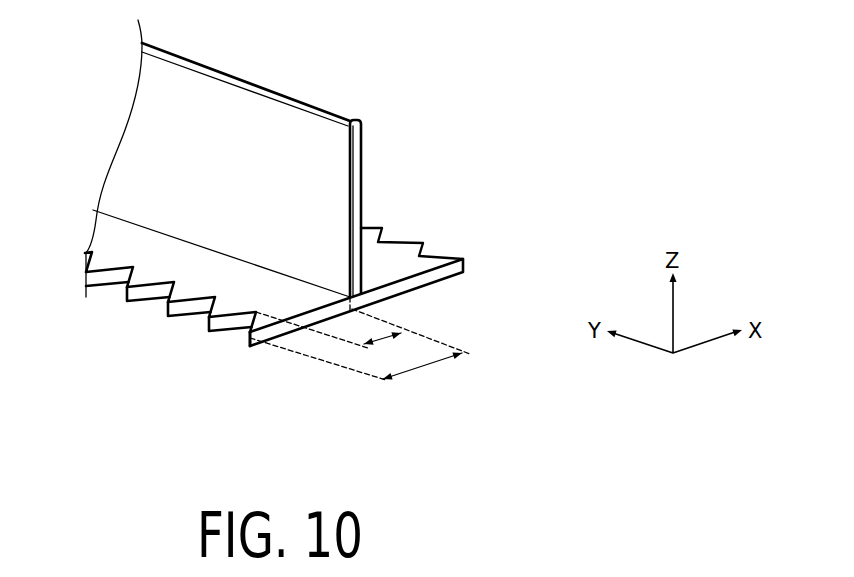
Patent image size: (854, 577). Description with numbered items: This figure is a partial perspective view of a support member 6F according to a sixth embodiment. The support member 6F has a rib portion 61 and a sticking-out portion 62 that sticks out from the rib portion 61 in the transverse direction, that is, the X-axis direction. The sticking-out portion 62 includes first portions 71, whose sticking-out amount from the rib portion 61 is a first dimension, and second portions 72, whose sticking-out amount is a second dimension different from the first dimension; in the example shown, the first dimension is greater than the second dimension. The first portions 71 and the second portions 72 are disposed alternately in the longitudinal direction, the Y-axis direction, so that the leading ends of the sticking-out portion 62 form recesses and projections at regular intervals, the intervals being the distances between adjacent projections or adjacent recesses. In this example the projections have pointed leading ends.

The support member 6F is at (477, 100).
The rib portion 61 is at (363, 142).
The sticking-out portion 62 is at (315, 318).
The first portions 71 is at (122, 315).
The second portions 72 is at (117, 292).